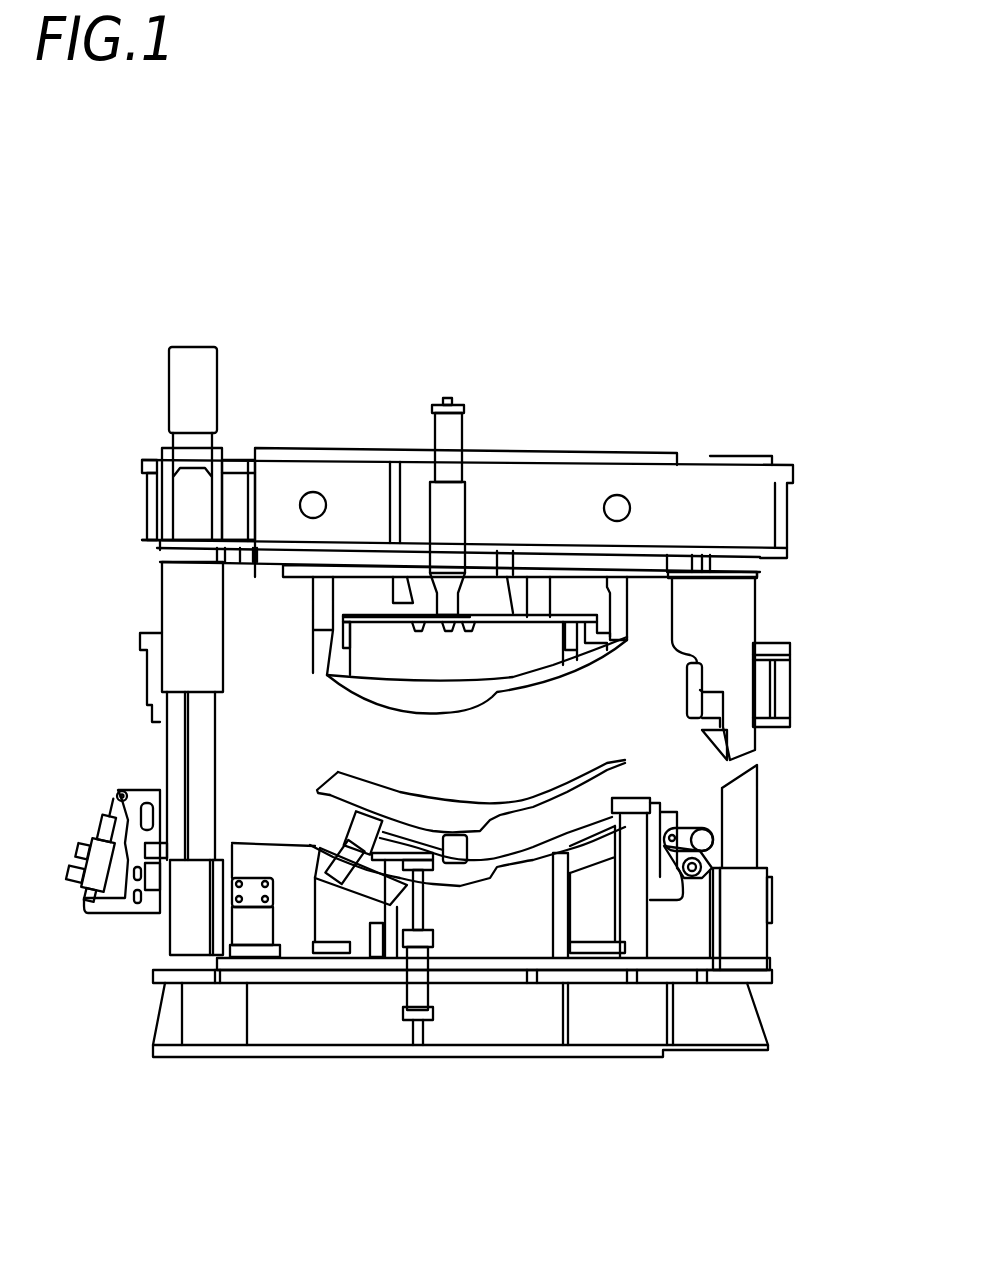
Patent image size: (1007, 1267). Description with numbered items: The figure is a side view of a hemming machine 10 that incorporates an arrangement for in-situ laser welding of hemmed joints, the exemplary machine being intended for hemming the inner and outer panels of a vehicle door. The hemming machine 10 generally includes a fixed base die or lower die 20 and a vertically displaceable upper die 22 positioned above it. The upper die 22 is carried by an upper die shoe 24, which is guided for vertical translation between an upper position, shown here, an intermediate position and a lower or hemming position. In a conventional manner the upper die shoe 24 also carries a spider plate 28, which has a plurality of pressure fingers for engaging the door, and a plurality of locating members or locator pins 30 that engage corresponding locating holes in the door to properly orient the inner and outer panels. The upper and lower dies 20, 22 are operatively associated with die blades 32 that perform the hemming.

The hemming machine 10 is at (736, 271).
The lower die 20 is at (347, 923).
The upper die 22 is at (652, 655).
The upper die shoe 24 is at (745, 503).
The spider plate 28 is at (550, 615).
The locating members 30 is at (565, 636).
The die blades 32 is at (630, 593).